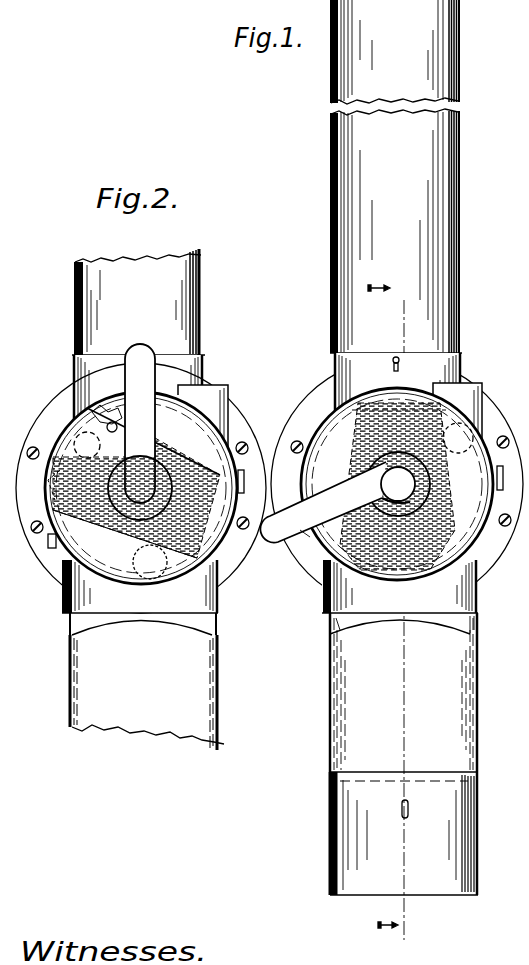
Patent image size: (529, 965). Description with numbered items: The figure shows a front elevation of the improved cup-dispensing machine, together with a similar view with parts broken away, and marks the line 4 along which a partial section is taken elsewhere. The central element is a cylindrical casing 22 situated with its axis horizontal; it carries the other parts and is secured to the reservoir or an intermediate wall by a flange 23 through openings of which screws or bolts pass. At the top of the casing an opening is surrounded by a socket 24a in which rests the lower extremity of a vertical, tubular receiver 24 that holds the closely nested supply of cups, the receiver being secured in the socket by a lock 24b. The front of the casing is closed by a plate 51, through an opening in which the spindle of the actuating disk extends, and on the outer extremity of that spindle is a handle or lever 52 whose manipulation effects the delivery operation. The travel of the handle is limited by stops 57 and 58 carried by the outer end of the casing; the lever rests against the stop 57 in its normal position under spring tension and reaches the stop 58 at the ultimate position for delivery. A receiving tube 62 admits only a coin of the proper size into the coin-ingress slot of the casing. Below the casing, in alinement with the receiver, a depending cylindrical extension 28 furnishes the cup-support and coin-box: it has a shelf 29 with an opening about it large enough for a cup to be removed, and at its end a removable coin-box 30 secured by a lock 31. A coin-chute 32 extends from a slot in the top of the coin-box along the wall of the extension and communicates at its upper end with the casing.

In FIG. 1, the receiver 24 is at (458, 246).
In FIG. 1, the section line 4— 4 is at (386, 604).
In FIG. 1, the socket 24a is at (464, 352).
In FIG. 2, the socket 24a is at (208, 350).
In FIG. 1, the lock 24b is at (400, 362).
In FIG. 1, the receiving tube 62 is at (484, 396).
In FIG. 1, the casing 22 is at (318, 423).
In FIG. 2, the casing 22 is at (60, 423).
In FIG. 1, the plate 51 is at (470, 512).
In FIG. 2, the plate 51 is at (213, 450).
In FIG. 1, the stop 58 is at (503, 480).
In FIG. 2, the stop 58 is at (243, 478).
In FIG. 1, the stop 57 is at (310, 537).
In FIG. 2, the stop 57 is at (55, 541).
In FIG. 1, the handle or lever 52 is at (505, 482).
In FIG. 2, the handle or lever 52 is at (136, 346).
In FIG. 1, the flange 23 is at (470, 578).
In FIG. 2, the flange 23 is at (227, 567).
In FIG. 1, the coin-chute 32 is at (330, 598).
In FIG. 2, the coin-chute 32 is at (68, 673).
In FIG. 1, the depending cylindrical extension 28 is at (478, 625).
In FIG. 2, the depending cylindrical extension 28 is at (213, 628).
In FIG. 1, the shelf 29 is at (385, 771).
In FIG. 1, the lock 31 is at (409, 805).
In FIG. 1, the coin-box 30 is at (478, 846).